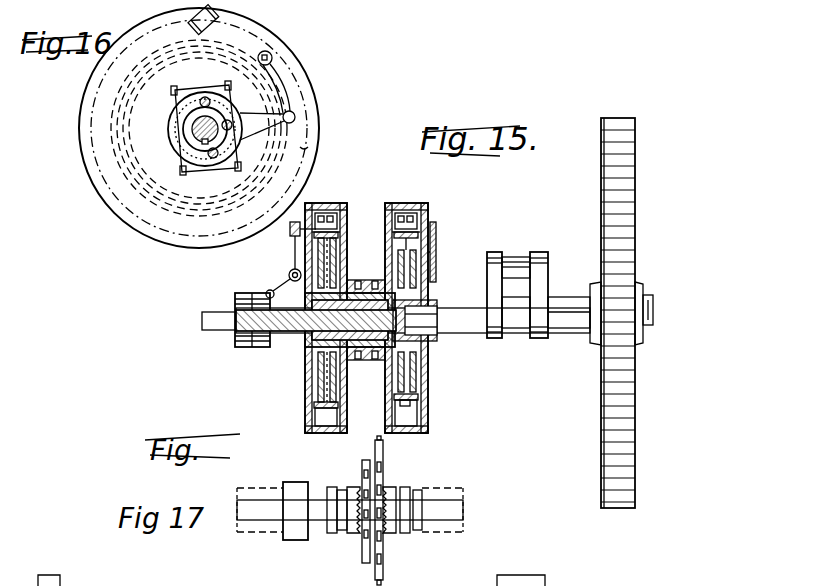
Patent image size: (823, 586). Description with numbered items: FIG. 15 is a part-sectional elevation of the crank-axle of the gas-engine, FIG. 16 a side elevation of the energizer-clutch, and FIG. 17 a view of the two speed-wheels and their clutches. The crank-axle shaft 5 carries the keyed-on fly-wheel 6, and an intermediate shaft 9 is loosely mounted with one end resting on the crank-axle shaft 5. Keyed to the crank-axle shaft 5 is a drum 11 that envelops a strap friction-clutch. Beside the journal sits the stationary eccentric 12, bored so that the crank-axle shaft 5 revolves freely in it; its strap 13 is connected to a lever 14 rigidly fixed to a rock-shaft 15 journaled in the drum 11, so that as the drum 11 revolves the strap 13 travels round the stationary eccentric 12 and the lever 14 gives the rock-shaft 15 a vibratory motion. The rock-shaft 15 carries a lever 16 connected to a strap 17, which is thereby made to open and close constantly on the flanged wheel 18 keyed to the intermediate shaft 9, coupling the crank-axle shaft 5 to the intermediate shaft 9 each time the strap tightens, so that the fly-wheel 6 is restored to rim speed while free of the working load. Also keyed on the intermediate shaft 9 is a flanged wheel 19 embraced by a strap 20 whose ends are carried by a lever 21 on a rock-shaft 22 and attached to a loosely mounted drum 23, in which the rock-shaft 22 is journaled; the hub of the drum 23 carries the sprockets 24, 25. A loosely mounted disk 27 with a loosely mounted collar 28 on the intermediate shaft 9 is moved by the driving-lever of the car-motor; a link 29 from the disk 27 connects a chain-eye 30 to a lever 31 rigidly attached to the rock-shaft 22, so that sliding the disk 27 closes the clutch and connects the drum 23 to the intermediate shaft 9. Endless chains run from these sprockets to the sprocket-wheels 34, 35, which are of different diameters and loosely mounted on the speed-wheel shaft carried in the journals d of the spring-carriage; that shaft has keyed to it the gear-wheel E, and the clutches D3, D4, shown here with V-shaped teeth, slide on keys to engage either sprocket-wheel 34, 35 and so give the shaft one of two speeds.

In FIG. 16, the crank-axle shaft 5 is at (100, 196).
In FIG. 15, the crank-axle shaft 5 is at (560, 303).
In FIG. 15, the fly-wheel 6 is at (624, 173).
In FIG. 15, the intermediate shaft 9 is at (294, 327).
In FIG. 16, the drum 11 is at (305, 146).
In FIG. 15, the drum 11 is at (418, 205).
In FIG. 16, the stationary eccentric 12 is at (195, 122).
In FIG. 16, the strap 13 is at (195, 100).
In FIG. 16, the lever 14 is at (286, 101).
In FIG. 15, the lever 14 is at (434, 262).
In FIG. 16, the rock-shaft 15 is at (272, 62).
In FIG. 15, the rock-shaft 15 is at (410, 224).
In FIG. 16, the lever 16 is at (272, 76).
In FIG. 15, the lever 16 is at (393, 204).
In FIG. 16, the strap 17 is at (128, 100).
In FIG. 15, the strap 17 is at (403, 400).
In FIG. 15, the wheel 18 is at (403, 373).
In FIG. 15, the wheel 19 is at (324, 373).
In FIG. 15, the strap 20 is at (312, 412).
In FIG. 15, the lever 21 is at (327, 204).
In FIG. 15, the rock-shaft 22 is at (345, 204).
In FIG. 15, the drum 23 is at (346, 252).
In FIG. 15, the sprocket 24 is at (376, 284).
In FIG. 15, the sprocket 25 is at (358, 352).
In FIG. 15, the disk 27 is at (237, 340).
In FIG. 15, the collar 28 is at (248, 346).
In FIG. 15, the link 29 is at (274, 295).
In FIG. 15, the chain-eye 30 is at (289, 275).
In FIG. 15, the lever 31 is at (296, 268).
In FIG. 17, the sprocket-wheel 34 is at (384, 476).
In FIG. 17, the sprocket-wheel 35 is at (352, 515).
In FIG. 17, the journal d is at (354, 506).
In FIG. 17, the gear-wheel E is at (295, 533).
In FIG. 17, the clutch D3 is at (338, 476).
In FIG. 17, the clutch D4 is at (420, 476).